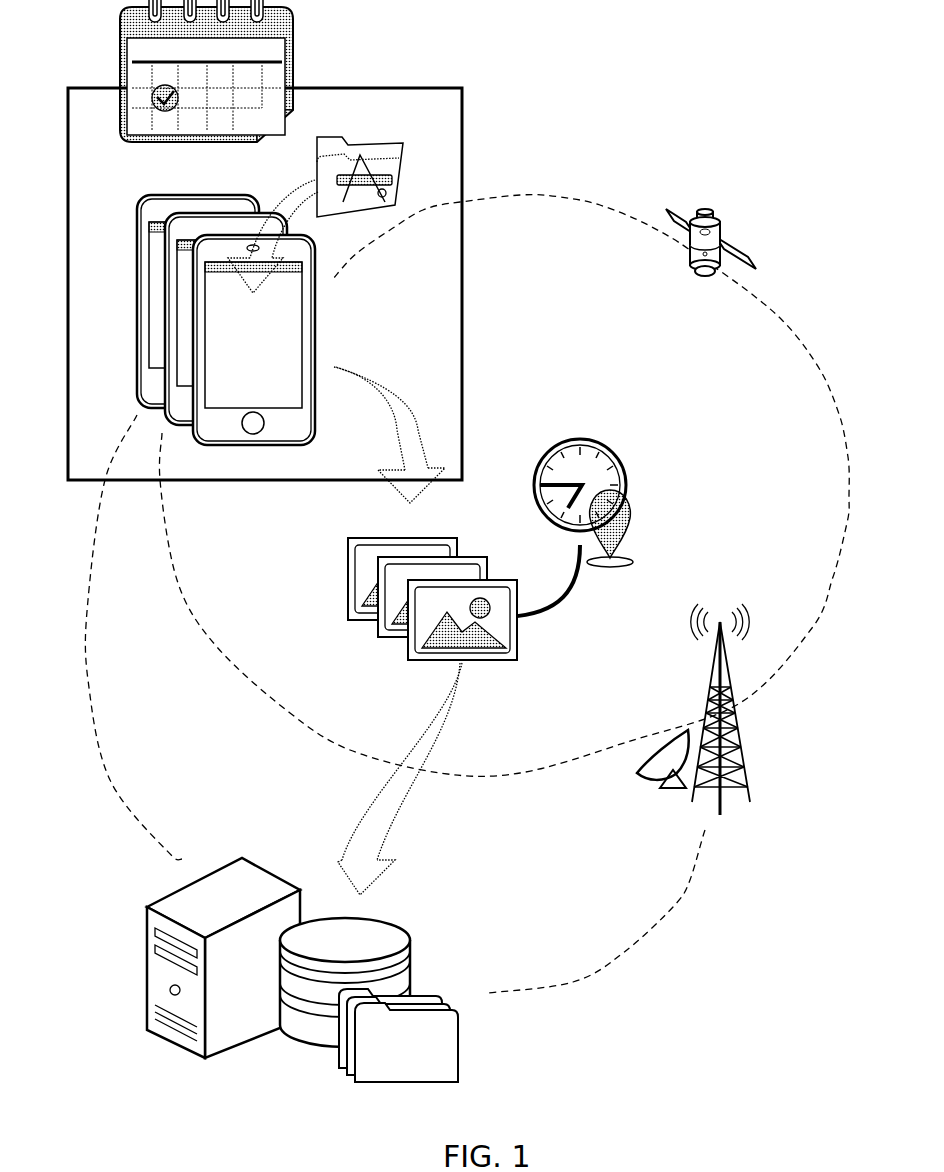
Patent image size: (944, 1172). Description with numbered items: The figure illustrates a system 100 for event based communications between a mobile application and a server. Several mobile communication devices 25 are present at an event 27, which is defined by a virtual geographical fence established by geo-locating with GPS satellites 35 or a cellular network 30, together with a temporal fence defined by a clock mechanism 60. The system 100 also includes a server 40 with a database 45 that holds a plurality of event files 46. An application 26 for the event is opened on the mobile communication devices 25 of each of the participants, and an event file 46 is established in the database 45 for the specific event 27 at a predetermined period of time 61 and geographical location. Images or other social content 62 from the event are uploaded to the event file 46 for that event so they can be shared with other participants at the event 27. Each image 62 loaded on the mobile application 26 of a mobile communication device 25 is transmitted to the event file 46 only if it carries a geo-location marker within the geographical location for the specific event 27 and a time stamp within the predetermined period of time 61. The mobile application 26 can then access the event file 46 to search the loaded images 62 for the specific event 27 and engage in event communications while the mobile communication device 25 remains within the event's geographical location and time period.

The system 100 is at (700, 98).
The mobile communication devices 25 is at (123, 323).
The application 26 is at (403, 158).
The event 27 is at (293, 23).
The cellular network 30 is at (748, 752).
The GPS satellites 35 is at (722, 232).
The server 40 is at (153, 930).
The database 45 is at (412, 948).
The event files 46 is at (447, 1032).
The clock mechanism 60 is at (624, 468).
The predetermined period of time 61 is at (630, 512).
The images or other social content 62 is at (517, 648).